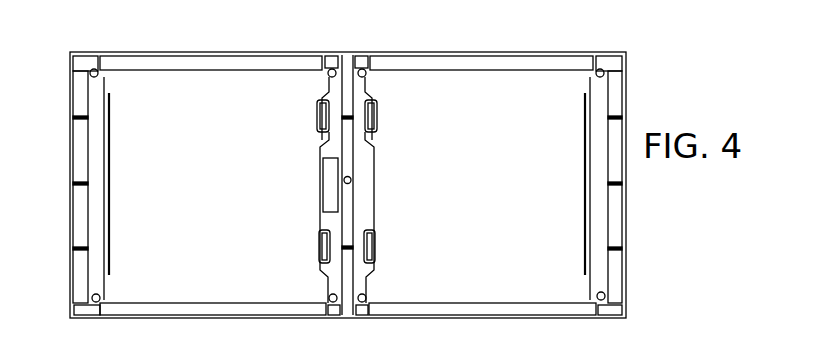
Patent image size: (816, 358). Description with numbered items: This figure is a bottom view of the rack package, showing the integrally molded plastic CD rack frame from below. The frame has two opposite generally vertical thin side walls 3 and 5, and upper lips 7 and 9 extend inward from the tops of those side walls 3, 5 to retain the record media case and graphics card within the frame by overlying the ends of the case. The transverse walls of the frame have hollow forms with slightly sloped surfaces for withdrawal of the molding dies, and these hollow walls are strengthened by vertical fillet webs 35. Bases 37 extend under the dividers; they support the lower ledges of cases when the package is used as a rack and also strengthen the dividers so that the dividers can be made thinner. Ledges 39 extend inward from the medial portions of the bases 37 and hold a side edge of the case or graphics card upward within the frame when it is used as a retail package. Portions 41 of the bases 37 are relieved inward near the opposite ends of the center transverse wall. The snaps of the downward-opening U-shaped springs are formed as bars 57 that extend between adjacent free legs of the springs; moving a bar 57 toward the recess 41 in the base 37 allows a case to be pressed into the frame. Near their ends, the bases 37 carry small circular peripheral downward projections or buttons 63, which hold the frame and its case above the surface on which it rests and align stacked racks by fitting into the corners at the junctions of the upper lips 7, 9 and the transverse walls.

The side wall 3 is at (543, 318).
The side wall 5 is at (558, 52).
The upper lip 7 is at (502, 305).
The upper lip 9 is at (563, 62).
The vertical fillet web 35 is at (73, 191).
The base 37 is at (370, 184).
The ledge 39 is at (110, 217).
The relieved portion 41 is at (373, 98).
The bar 57 is at (376, 118).
The button 63 is at (367, 68).